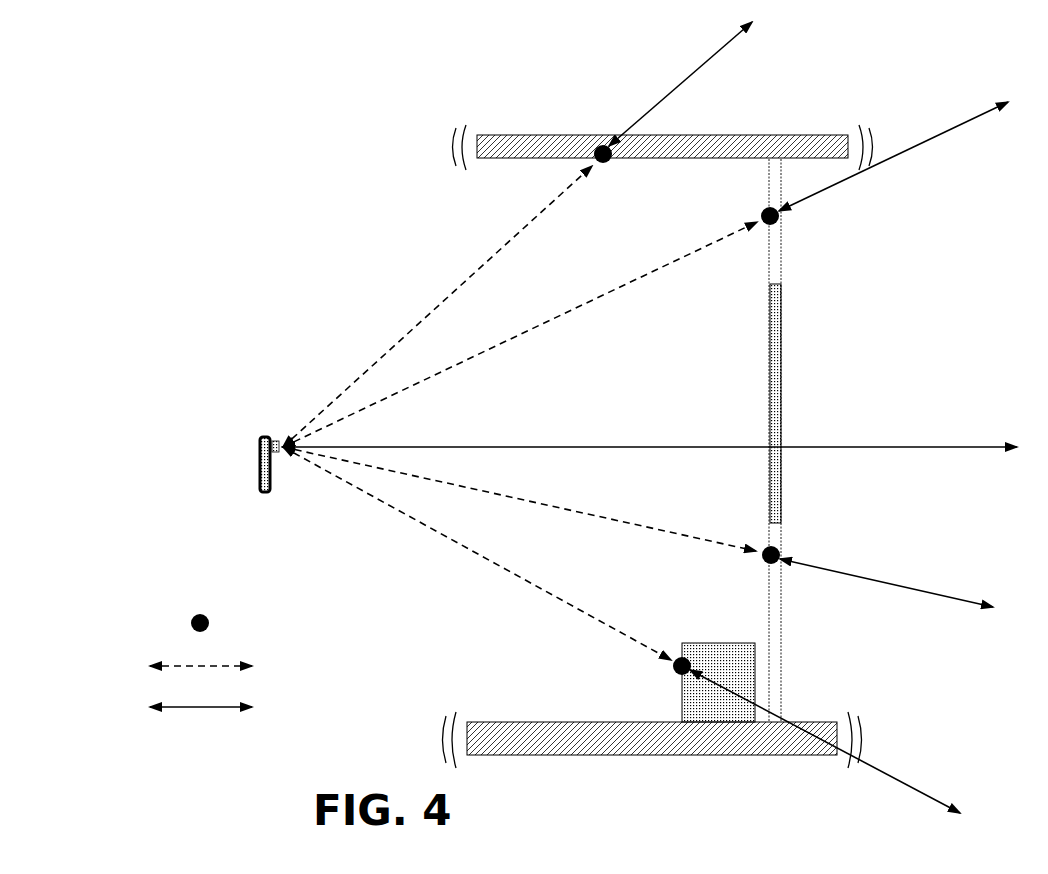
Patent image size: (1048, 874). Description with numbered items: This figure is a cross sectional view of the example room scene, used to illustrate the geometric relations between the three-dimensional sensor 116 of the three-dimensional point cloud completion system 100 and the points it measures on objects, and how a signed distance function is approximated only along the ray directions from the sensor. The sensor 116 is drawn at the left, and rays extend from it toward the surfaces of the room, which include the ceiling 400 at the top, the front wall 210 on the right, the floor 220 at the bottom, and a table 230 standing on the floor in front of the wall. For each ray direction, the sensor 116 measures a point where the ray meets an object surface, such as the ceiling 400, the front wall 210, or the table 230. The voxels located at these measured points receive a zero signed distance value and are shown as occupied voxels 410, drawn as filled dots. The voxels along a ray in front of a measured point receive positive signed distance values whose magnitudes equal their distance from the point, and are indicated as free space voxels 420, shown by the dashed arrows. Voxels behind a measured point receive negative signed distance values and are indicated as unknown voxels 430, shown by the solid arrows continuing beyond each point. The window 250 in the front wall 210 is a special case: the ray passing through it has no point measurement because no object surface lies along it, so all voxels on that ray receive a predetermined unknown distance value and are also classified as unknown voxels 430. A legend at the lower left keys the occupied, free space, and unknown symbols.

The 3D point cloud completion system 100 is at (260, 476).
The 3D sensor 116 is at (274, 440).
The front wall 210 is at (783, 268).
The floor 220 is at (560, 722).
The table 230 is at (742, 643).
The window 250 is at (770, 388).
The ceiling 400 is at (520, 160).
The occupied voxels 410 is at (180, 622).
The free space voxels 420 is at (178, 661).
The unknown voxels 430 is at (182, 702).